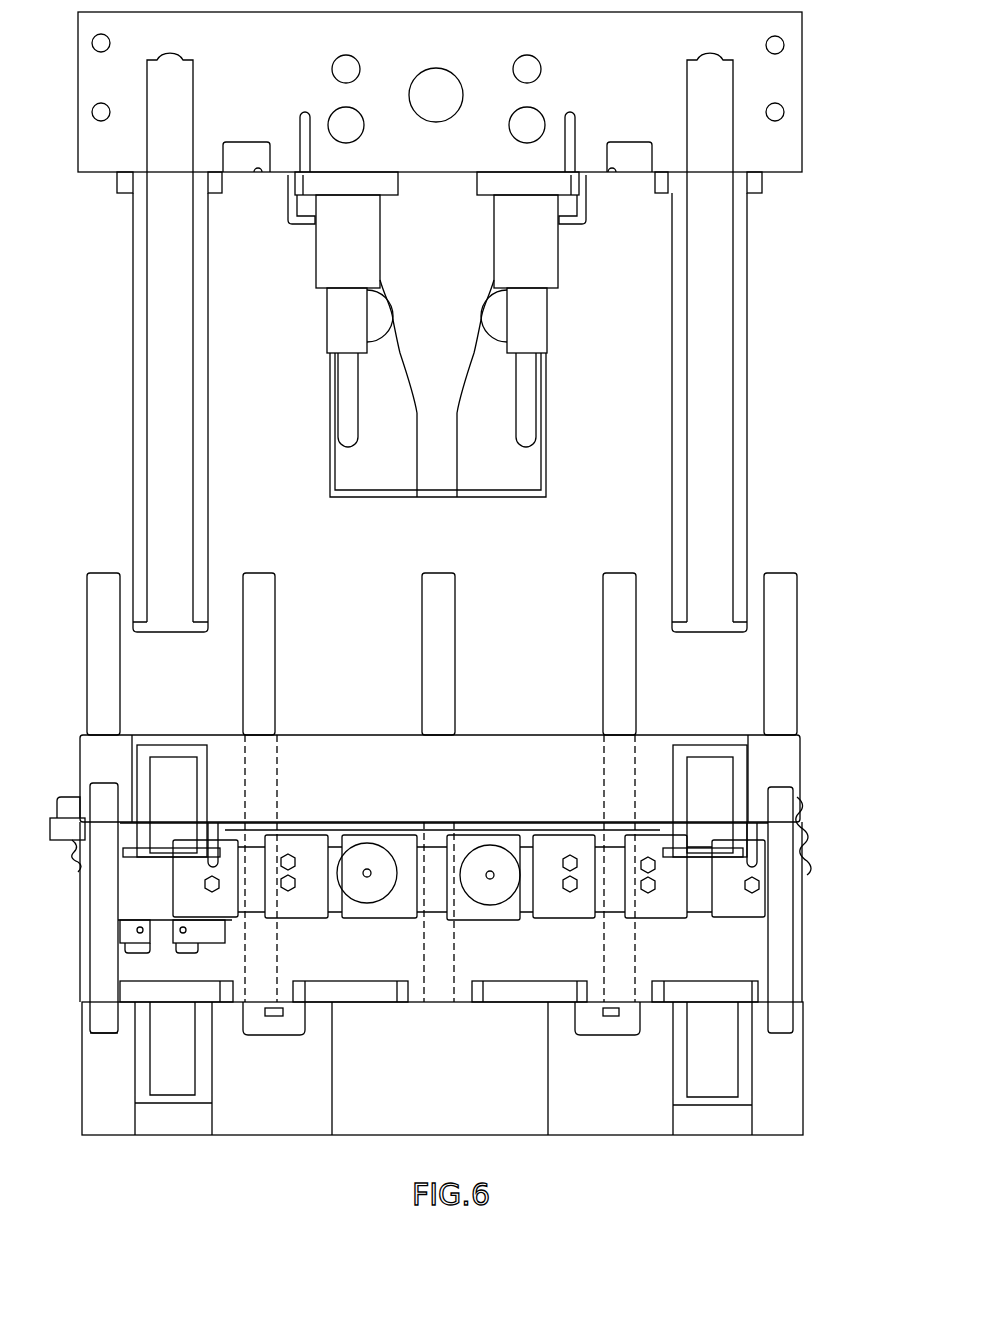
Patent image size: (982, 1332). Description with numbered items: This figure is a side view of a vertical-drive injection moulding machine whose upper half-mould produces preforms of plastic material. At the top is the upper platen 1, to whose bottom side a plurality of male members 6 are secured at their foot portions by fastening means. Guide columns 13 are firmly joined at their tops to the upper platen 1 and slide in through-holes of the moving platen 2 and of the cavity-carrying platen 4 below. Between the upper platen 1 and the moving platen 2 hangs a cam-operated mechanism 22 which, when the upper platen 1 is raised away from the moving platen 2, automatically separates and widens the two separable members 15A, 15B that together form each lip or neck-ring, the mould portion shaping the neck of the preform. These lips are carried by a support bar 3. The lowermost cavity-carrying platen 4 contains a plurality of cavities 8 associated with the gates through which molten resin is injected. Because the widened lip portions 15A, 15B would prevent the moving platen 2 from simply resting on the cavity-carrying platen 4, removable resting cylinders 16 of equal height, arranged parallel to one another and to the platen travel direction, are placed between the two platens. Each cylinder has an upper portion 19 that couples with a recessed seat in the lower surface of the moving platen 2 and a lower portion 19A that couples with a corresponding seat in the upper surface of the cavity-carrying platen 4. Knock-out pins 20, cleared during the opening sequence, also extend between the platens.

The upper platen 1 is at (786, 157).
The moving platen 2 is at (783, 757).
The support bar 3 is at (752, 903).
The cavity-carrying platen 4 is at (775, 1085).
The male members 6 is at (337, 252).
The cavities 8 is at (743, 992).
The guide columns 13 is at (709, 388).
The separable member of the lip 15A is at (207, 930).
The separable member of the lip 15B is at (130, 930).
The resting cylinders 16 is at (107, 878).
The upper portion of the removable member 19 is at (103, 795).
The lower portion of the removable member 19A is at (105, 1017).
The knock-out pins 20 is at (778, 635).
The cam-operated mechanism 22 is at (487, 460).